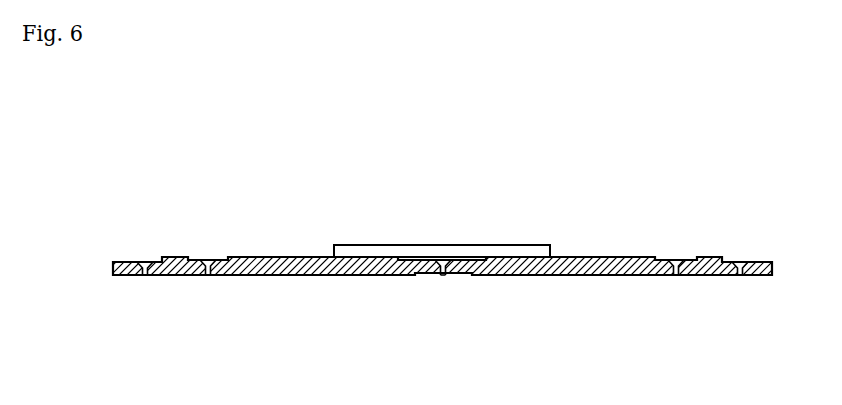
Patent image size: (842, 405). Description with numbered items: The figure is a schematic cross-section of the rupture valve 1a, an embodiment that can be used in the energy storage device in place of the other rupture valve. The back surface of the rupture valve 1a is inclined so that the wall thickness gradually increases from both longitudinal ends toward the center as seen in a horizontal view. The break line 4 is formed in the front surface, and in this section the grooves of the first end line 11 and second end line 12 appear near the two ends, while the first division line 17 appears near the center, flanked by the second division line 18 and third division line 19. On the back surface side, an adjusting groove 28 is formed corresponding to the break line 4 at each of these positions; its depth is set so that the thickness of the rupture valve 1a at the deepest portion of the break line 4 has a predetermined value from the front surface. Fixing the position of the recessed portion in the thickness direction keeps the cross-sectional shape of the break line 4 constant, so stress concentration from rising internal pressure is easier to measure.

The rupture valve 1a is at (581, 231).
The break line 4 is at (451, 258).
The first end line 11 is at (144, 262).
The second end line 12 is at (739, 262).
The first division line 17 is at (441, 258).
The second division line 18 is at (209, 260).
The third division line 19 is at (676, 260).
The adjusting groove 28 is at (145, 275).